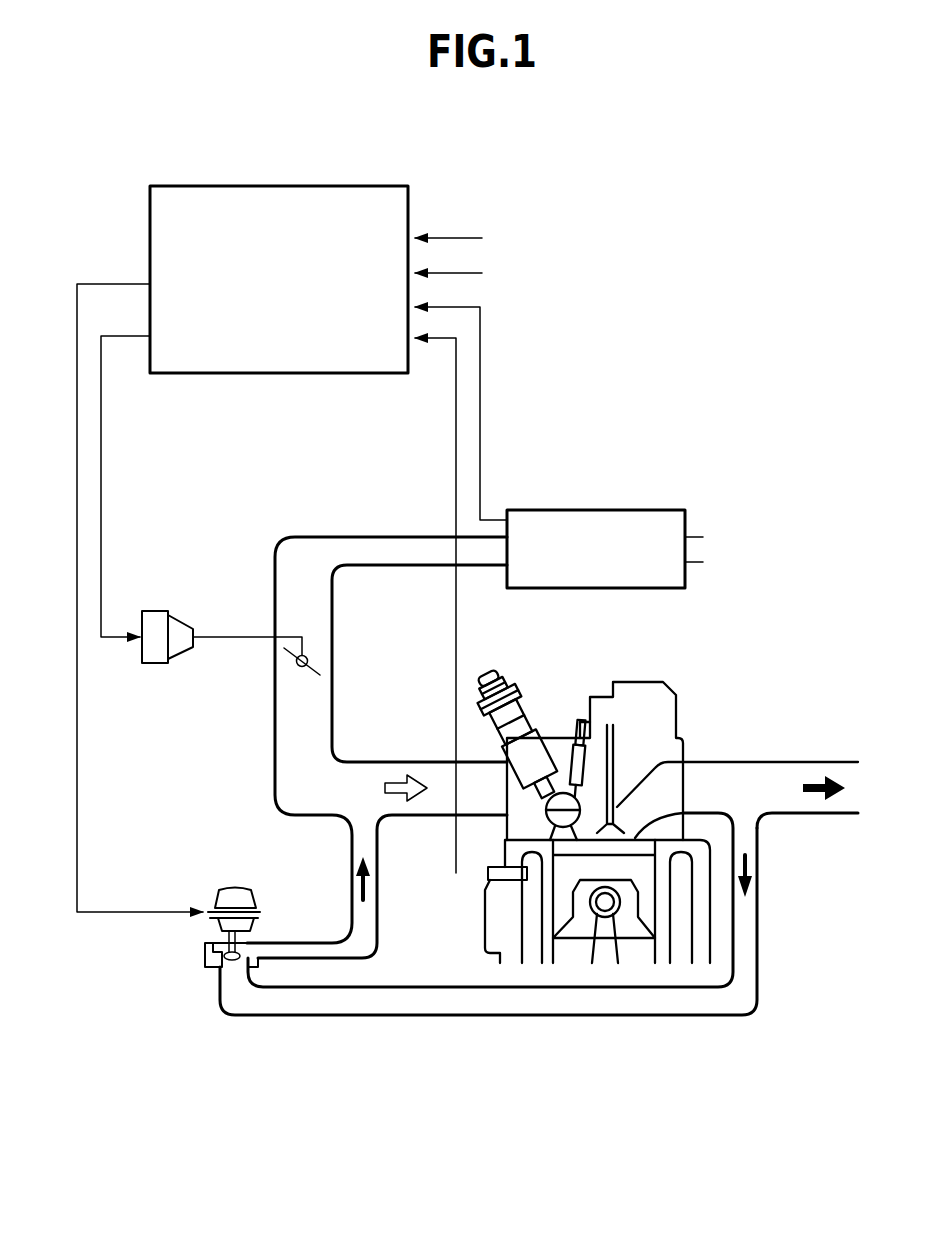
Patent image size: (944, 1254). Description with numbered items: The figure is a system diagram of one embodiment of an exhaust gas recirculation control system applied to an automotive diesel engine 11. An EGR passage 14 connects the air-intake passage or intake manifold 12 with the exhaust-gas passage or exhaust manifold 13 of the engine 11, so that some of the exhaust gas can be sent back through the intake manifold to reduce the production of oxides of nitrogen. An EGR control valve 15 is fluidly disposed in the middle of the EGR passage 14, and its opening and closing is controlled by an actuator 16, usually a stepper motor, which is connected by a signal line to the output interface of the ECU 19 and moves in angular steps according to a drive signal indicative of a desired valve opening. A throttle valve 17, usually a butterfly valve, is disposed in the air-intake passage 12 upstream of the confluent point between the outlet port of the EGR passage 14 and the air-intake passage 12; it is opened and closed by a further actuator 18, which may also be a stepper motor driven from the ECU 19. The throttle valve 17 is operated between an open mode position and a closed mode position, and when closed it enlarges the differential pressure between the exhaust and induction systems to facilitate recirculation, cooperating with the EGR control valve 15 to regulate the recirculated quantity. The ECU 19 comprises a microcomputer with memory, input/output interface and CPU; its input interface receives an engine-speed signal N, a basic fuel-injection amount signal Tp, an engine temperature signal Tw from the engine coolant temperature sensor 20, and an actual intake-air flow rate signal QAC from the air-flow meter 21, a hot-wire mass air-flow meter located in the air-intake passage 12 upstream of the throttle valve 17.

The engine 11 is at (675, 748).
The air-intake passage 12 is at (318, 726).
The exhaust-gas passage 13 is at (787, 772).
The EGR passage 14 is at (513, 1013).
The EGR control valve 15 is at (233, 965).
The actuator 16 is at (228, 897).
The throttle valve 17 is at (297, 668).
The actuator 18 is at (183, 617).
The ECU 19 is at (258, 374).
The engine coolant temperature sensor 20 is at (478, 890).
The air-flow meter 21 is at (590, 518).